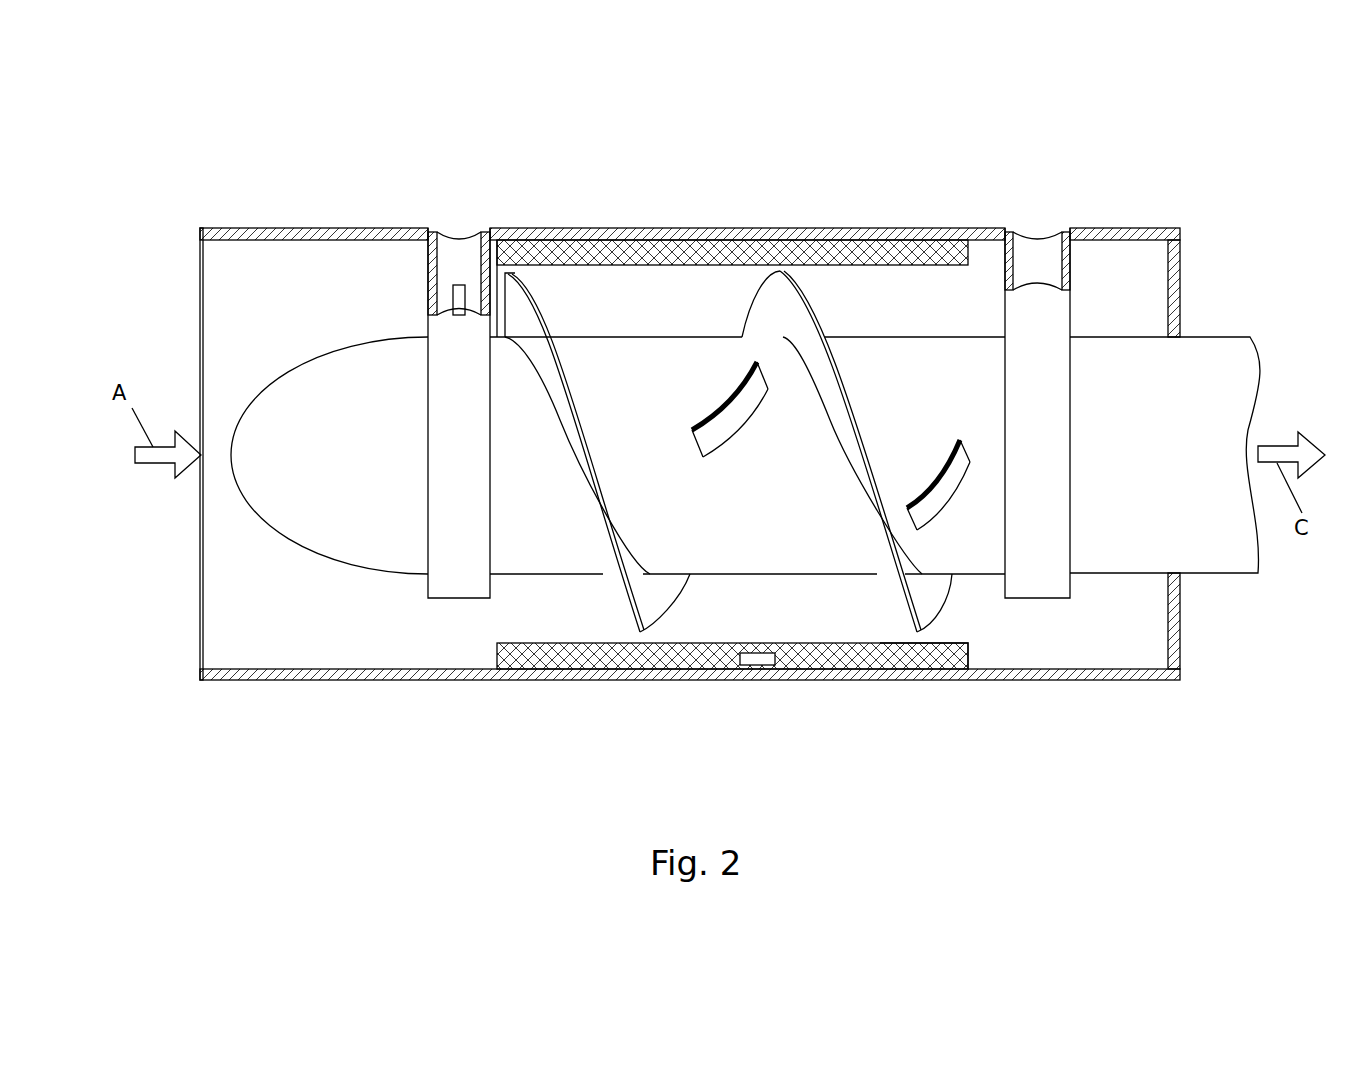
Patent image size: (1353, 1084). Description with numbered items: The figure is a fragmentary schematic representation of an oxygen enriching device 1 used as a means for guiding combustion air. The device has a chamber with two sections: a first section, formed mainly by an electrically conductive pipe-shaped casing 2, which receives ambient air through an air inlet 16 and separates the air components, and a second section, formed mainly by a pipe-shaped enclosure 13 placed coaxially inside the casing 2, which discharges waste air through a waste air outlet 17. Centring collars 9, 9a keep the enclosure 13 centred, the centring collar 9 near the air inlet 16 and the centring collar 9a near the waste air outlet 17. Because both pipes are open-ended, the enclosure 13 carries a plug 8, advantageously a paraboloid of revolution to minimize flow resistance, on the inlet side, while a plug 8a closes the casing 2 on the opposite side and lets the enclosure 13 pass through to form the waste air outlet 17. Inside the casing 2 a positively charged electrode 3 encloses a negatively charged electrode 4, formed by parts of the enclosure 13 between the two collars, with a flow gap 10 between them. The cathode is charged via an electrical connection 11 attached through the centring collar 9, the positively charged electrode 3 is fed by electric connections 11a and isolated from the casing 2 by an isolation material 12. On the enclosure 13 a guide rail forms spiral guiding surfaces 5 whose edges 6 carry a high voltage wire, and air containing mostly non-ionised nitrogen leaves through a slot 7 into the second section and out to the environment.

The oxygen enriching device 1 is at (128, 150).
The casing 2 is at (1130, 232).
The positively charged electrode 3 is at (537, 670).
The negatively charged electrode 4 is at (700, 538).
The spiral guiding surfaces 5 is at (648, 600).
The edges of the guide rail 6 is at (535, 275).
The slot 7 is at (724, 397).
The plug 8 is at (253, 512).
The plug 8a is at (1176, 297).
The centring collar 9 is at (423, 267).
The centring collar 9a is at (1023, 232).
The flow gap 10 is at (812, 237).
The electrical connection 11 is at (458, 285).
The electric connections 11a is at (768, 672).
The isolation material 12 is at (907, 668).
The enclosure 13 is at (598, 335).
The air inlet 16 is at (282, 307).
The waste air outlet 17 is at (1222, 390).